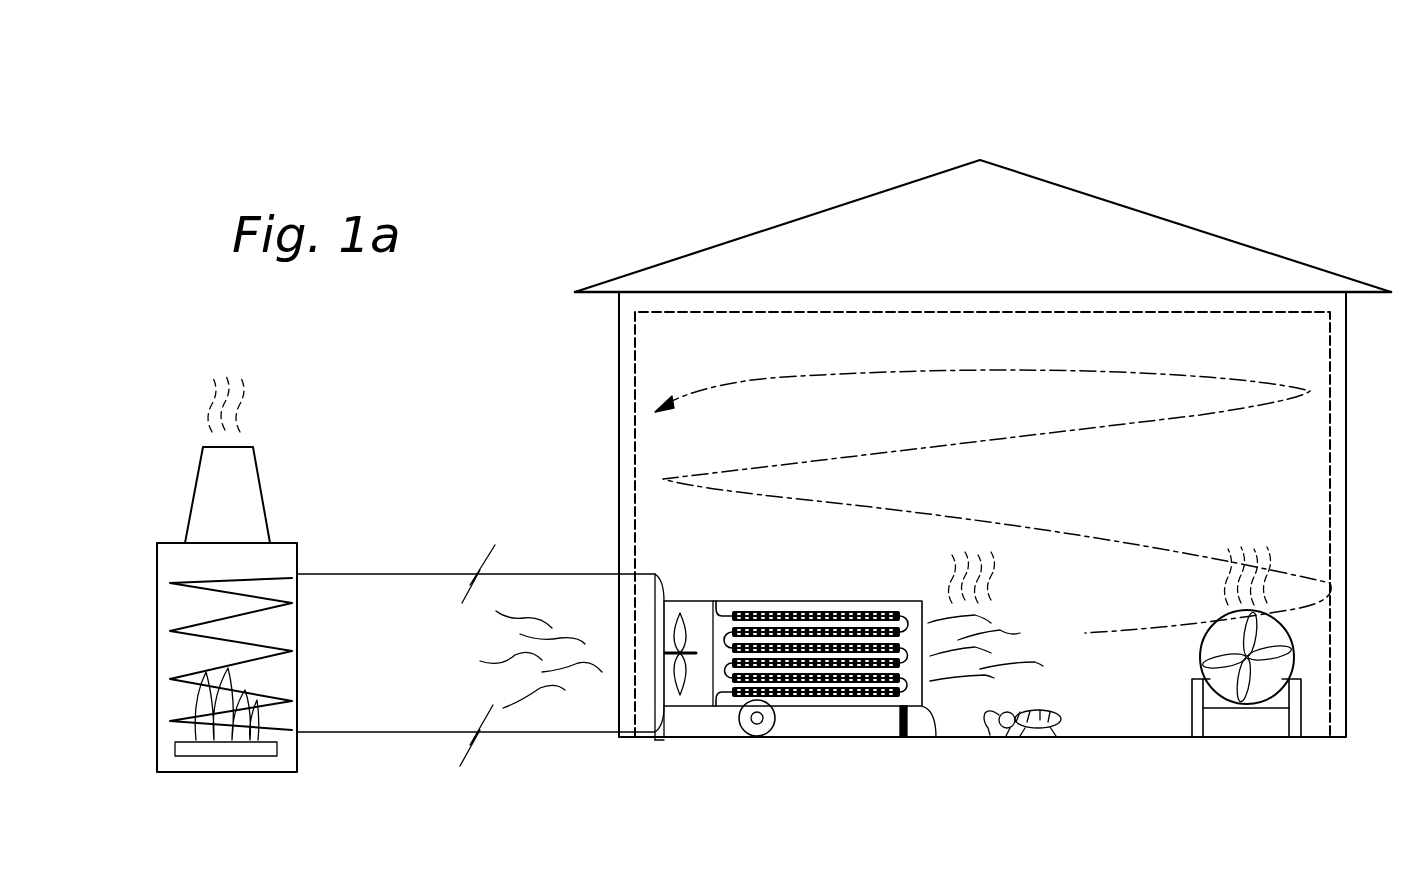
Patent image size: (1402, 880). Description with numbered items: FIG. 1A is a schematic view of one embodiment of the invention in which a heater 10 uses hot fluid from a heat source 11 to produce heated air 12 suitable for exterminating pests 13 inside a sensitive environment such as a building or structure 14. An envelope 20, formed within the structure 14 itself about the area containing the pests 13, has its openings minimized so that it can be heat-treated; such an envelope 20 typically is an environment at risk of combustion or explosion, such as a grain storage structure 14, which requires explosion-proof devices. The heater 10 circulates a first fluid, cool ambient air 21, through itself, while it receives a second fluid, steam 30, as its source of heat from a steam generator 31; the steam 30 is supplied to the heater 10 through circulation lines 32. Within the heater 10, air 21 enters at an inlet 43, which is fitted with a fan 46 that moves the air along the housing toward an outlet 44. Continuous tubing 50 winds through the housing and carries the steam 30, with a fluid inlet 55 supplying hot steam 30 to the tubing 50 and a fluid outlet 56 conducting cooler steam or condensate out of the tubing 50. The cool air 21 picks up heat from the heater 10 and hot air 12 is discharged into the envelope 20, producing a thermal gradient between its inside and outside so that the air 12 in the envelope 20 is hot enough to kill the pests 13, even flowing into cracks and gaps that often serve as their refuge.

The heater 10 is at (796, 707).
The heat source 11 is at (318, 436).
The heated air 12 is at (804, 378).
The pests 13 is at (1050, 727).
The structure 14 is at (1182, 225).
The envelope 20 is at (627, 392).
The cool ambient air 21 is at (526, 614).
The steam 30 is at (362, 574).
The steam generator 31 is at (180, 608).
The circulation lines 32 is at (380, 578).
The inlet 43 is at (665, 708).
The outlet 44 is at (925, 707).
The fan 46 is at (690, 616).
The continuous tubing 50 is at (856, 693).
The fluid inlet 55 is at (572, 580).
The fluid outlet 56 is at (566, 734).